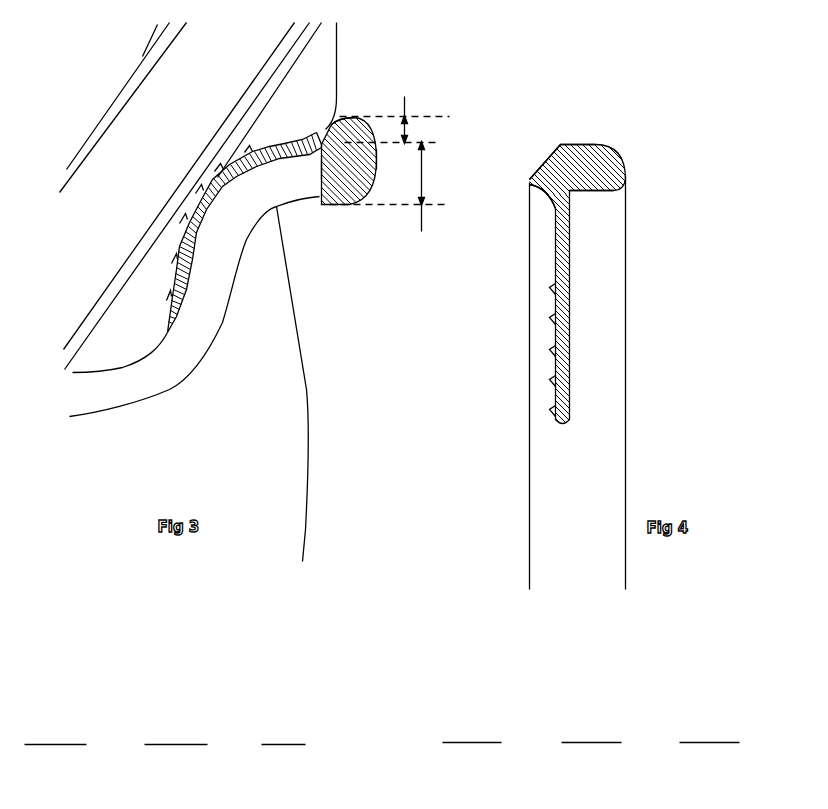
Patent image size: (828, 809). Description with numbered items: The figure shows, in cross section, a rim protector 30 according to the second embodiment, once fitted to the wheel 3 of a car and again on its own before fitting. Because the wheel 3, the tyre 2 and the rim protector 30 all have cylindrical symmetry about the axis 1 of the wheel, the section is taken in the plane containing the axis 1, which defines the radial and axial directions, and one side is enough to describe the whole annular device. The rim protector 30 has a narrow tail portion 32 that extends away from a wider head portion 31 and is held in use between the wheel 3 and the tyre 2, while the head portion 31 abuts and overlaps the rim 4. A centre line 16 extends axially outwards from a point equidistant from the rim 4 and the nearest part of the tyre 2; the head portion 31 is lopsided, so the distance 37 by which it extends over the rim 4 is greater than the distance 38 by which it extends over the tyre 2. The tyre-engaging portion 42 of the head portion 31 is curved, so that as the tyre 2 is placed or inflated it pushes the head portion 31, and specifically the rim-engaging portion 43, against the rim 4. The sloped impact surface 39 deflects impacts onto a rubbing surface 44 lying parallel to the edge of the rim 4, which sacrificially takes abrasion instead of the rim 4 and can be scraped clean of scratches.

In FIG. 3, the axis 1 is at (36, 736).
In FIG. 4, the axis 1 is at (706, 732).
In FIG. 3, the tyre 2 is at (332, 46).
In FIG. 3, the wheel 3 is at (182, 372).
In FIG. 3, the rim 4 is at (312, 176).
In FIG. 3, the centre line 16 is at (401, 143).
In FIG. 3, the rim protector 30 is at (339, 186).
In FIG. 4, the rim protector 30 is at (559, 240).
In FIG. 3, the head portion 31 is at (338, 198).
In FIG. 4, the head portion 31 is at (612, 164).
In FIG. 4, the tail portion 32 is at (562, 356).
In FIG. 3, the distance 37 is at (390, 195).
In FIG. 3, the distance 38 is at (395, 113).
In FIG. 3, the impact surface 39 is at (344, 114).
In FIG. 4, the impact surface 39 is at (534, 156).
In FIG. 3, the tyre-engaging portion 42 is at (308, 124).
In FIG. 4, the tyre-engaging portion 42 is at (532, 190).
In FIG. 3, the rim-engaging portion 43 is at (312, 162).
In FIG. 4, the rim-engaging portion 43 is at (588, 182).
In FIG. 3, the rubbing surface 44 is at (370, 154).
In FIG. 4, the rubbing surface 44 is at (570, 134).